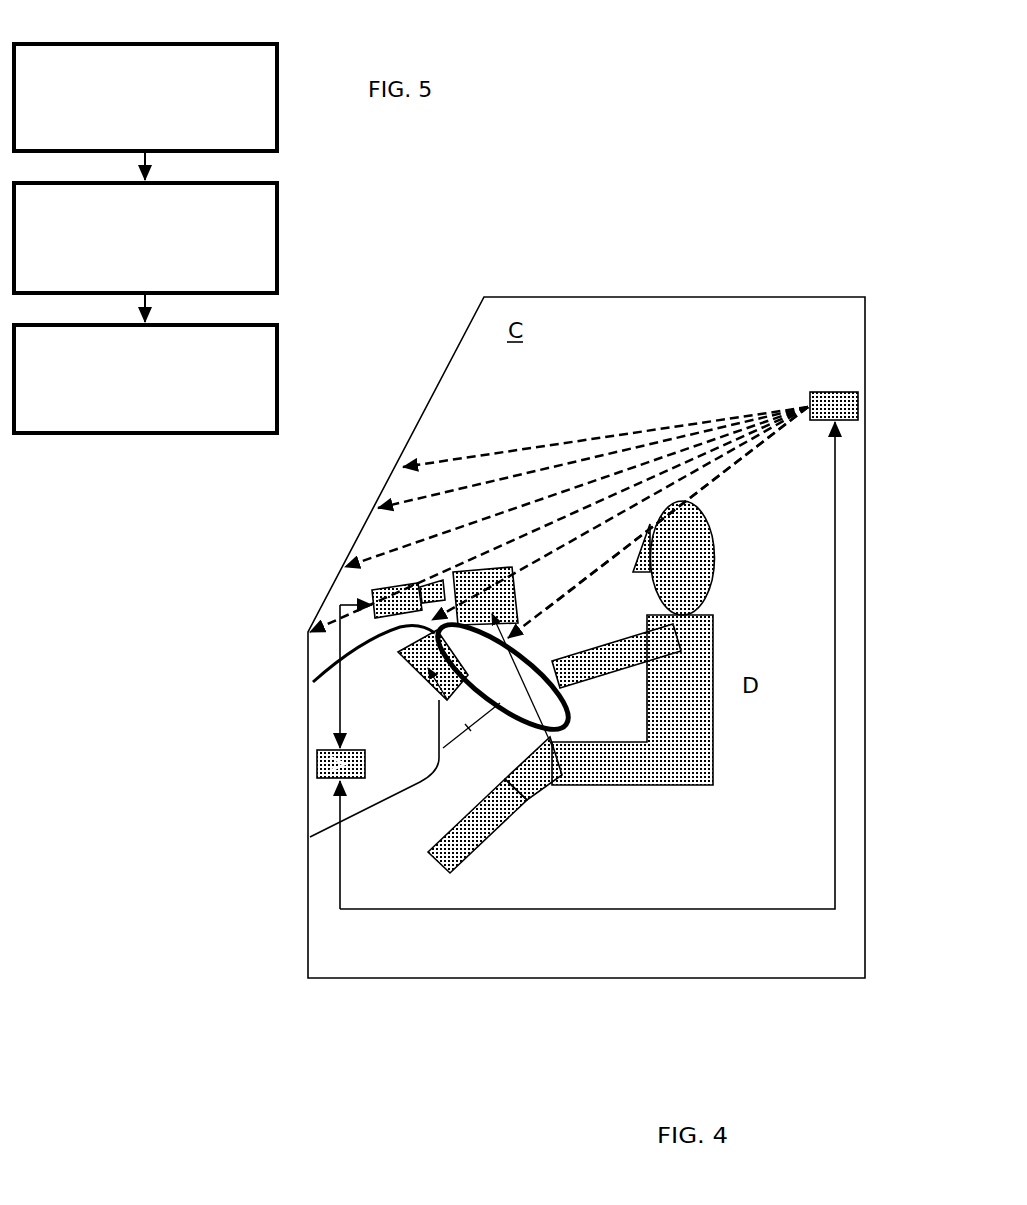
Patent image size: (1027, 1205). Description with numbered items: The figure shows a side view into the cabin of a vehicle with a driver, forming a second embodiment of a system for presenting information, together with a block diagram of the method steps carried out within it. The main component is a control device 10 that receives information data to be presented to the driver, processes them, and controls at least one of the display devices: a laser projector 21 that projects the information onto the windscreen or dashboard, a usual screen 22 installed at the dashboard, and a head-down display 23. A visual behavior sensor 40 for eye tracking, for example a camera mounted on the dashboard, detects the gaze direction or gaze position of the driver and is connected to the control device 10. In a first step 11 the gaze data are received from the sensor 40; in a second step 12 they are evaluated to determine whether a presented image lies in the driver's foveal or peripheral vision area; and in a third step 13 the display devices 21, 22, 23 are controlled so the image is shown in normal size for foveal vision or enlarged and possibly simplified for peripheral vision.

In FIG. 5, the first step 11 is at (145, 97).
In FIG. 5, the second step 12 is at (145, 238).
In FIG. 5, the third step 13 is at (145, 379).
In FIG. 4, the control device 10 is at (317, 763).
In FIG. 4, the laser projector 21 is at (828, 382).
In FIG. 4, the screen 22 is at (541, 722).
In FIG. 4, the head-down display 23 is at (420, 658).
In FIG. 4, the visual behavior sensor 40 is at (386, 597).